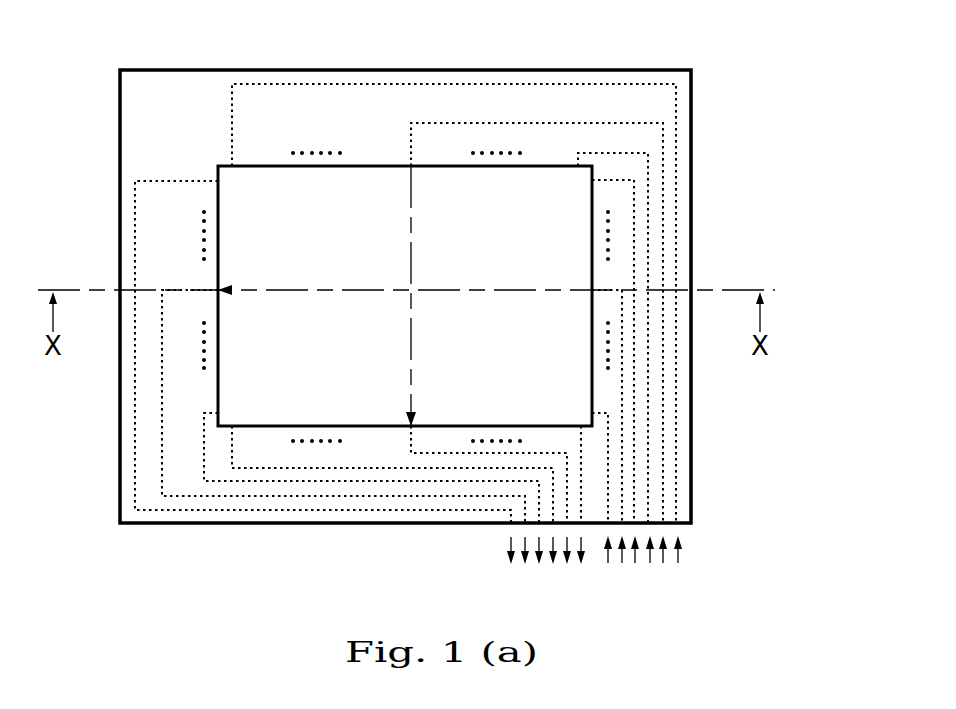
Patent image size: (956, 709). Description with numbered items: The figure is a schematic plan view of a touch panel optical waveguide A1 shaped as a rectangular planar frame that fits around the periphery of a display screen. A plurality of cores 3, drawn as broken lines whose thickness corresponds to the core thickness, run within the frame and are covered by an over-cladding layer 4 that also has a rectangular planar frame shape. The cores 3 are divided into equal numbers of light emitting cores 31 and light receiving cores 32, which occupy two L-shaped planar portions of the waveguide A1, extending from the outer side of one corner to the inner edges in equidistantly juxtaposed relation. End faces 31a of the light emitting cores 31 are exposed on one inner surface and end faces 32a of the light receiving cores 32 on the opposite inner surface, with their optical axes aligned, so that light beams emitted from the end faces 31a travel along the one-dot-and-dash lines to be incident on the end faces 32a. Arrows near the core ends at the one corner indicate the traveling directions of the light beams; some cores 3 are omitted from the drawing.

The touch panel optical waveguide A1 is at (157, 68).
The cores 3 is at (495, 341).
The light emitting cores 31 is at (620, 180).
The light receiving cores 32 is at (288, 468).
The over-cladding layer 4 is at (663, 192).
The end faces of the light emitting cores 31a is at (415, 172).
The end faces of the light receiving cores 32a is at (219, 292).